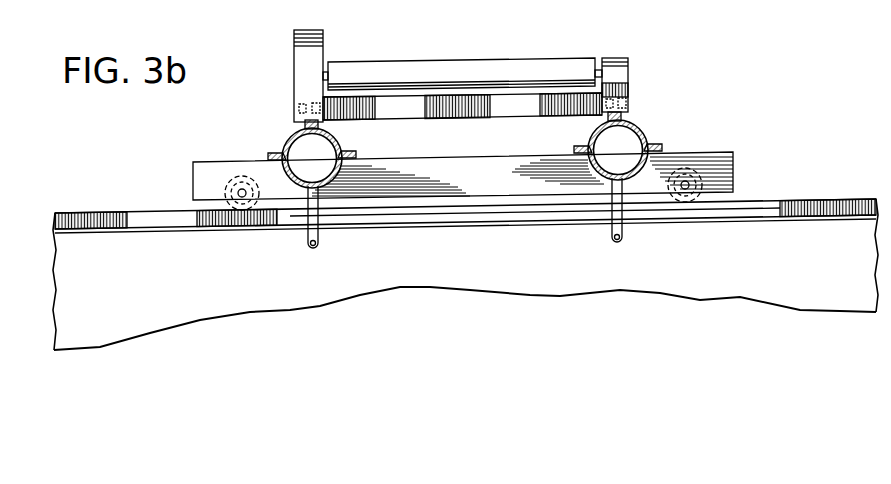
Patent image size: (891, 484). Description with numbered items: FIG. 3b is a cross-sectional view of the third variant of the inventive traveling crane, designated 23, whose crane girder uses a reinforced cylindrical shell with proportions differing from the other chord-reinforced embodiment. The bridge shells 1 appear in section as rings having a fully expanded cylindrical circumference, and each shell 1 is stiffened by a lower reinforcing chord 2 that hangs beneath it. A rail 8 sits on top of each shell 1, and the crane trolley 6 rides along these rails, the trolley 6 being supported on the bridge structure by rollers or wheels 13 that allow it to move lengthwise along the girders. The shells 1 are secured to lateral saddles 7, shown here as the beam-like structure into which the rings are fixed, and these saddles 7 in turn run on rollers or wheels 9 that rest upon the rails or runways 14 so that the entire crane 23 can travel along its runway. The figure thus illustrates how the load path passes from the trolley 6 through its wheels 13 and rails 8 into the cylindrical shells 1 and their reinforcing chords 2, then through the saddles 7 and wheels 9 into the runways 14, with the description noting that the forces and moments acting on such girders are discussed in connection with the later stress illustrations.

The bridge shell 1 is at (282, 130).
The lower reinforcing chord 2 is at (318, 233).
The crane trolley 6 is at (457, 51).
The lateral saddle 7 is at (722, 170).
The rail 8 is at (318, 125).
The roller or wheel 9 is at (238, 178).
The roller or wheel 13 is at (300, 102).
The rail or runway 14 is at (147, 214).
The traveling crane (third variant) 23 is at (561, 33).